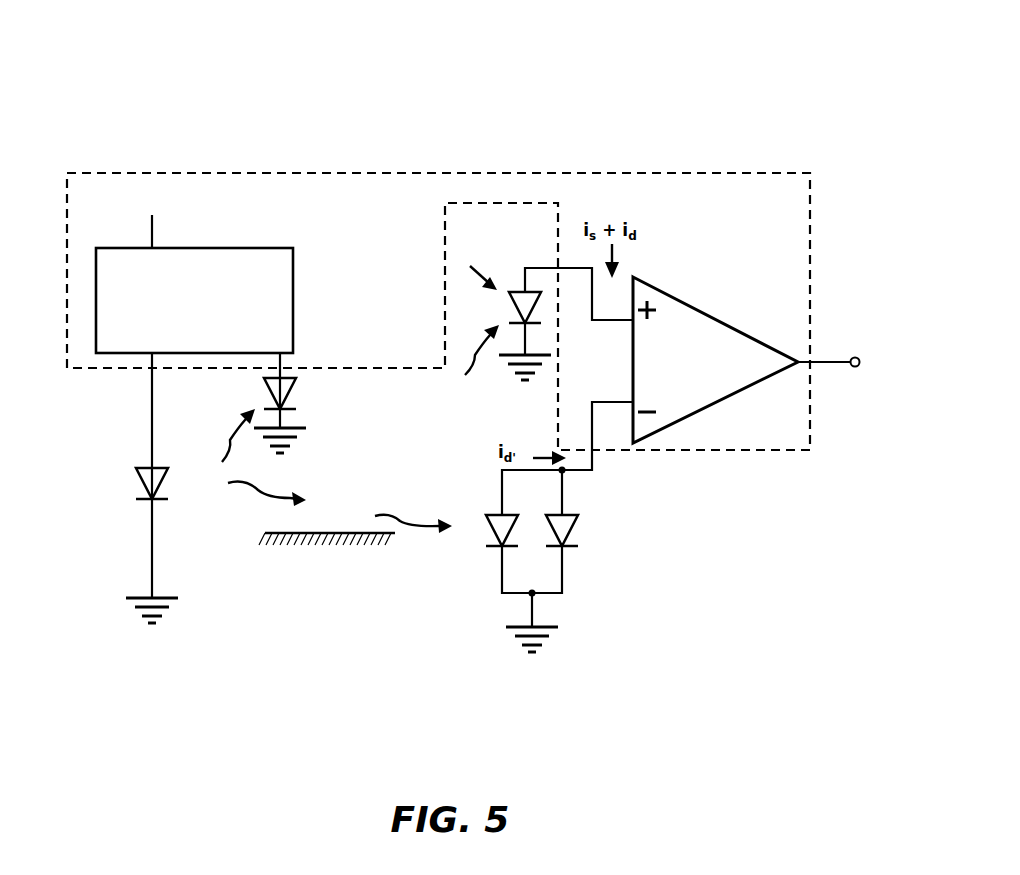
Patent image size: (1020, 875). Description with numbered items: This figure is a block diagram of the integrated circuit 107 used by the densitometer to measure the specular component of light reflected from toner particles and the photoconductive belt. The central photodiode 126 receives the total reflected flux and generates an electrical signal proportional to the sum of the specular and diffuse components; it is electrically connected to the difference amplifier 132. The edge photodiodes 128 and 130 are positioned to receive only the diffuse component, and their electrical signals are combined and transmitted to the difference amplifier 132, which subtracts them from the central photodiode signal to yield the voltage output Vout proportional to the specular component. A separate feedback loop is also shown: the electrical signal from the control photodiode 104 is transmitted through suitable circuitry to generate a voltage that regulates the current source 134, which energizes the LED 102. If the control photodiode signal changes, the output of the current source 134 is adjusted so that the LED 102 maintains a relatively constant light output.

The integrated circuit 107 is at (548, 145).
The current source 134 is at (268, 246).
The LED 102 is at (140, 470).
The control photodiode 104 is at (293, 390).
The central photodiode 126 is at (520, 290).
The difference amplifier 132 is at (697, 305).
The edge photodiode 128 is at (490, 530).
The edge photodiode 130 is at (570, 530).